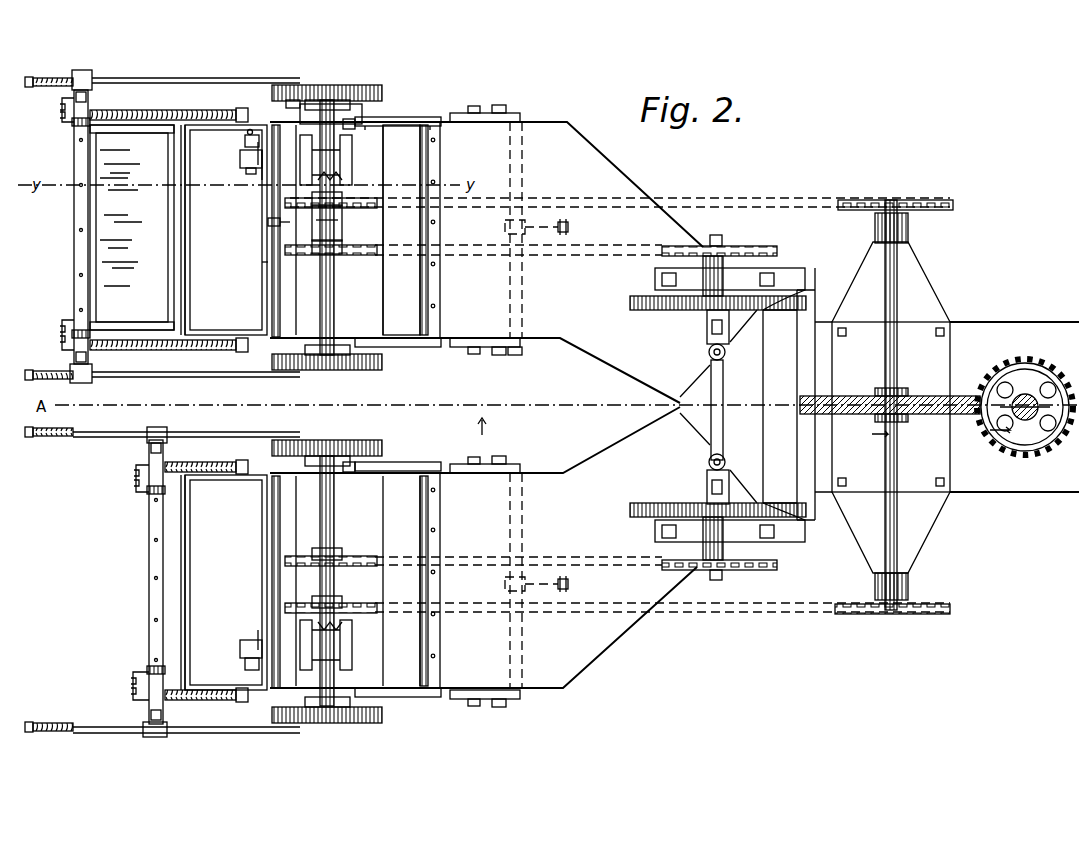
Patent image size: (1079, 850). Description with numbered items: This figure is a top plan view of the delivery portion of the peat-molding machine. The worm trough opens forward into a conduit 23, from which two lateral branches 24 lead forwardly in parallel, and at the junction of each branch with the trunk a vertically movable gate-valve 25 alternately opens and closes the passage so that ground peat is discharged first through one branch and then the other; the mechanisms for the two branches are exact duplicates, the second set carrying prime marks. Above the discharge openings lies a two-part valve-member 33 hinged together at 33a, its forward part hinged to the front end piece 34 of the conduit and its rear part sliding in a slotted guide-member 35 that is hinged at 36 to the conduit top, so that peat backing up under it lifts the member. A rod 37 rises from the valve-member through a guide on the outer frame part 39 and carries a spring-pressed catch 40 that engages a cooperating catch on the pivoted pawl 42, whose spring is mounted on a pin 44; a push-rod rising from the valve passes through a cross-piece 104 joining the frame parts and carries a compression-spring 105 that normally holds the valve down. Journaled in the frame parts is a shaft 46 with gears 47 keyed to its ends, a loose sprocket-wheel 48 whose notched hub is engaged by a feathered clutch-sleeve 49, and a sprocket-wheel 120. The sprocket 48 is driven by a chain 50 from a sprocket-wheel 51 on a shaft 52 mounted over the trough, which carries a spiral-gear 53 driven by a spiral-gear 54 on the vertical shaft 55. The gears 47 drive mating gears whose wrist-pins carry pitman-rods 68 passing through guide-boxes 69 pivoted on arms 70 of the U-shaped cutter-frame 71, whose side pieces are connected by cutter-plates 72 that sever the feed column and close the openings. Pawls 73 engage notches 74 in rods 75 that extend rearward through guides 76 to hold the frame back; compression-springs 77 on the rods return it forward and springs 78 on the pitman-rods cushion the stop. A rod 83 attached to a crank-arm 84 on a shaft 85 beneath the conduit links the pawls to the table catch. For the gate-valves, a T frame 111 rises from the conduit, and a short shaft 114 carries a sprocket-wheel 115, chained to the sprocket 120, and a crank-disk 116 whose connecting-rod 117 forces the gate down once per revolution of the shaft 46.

The conduit 23 is at (789, 394).
The lateral branch 24 is at (565, 297).
The gate-valve 25 is at (732, 320).
The valve-member 33 is at (226, 230).
The hinge 33a is at (334, 296).
The front end piece 34 is at (186, 250).
The slotted guide-member 35 is at (401, 230).
The hinge 36 is at (430, 292).
The rod 37 is at (262, 180).
The frame part 39 is at (385, 118).
The spring-pressed catch 40 is at (240, 157).
The pawl 42 is at (305, 104).
The pin 44 is at (250, 129).
The shaft 46 is at (334, 285).
The gear 47 is at (352, 85).
The loose sprocket-wheel 48 is at (352, 208).
The feathered clutch-sleeve 49 is at (342, 172).
The chain 50 is at (548, 198).
The sprocket-wheel 51 is at (862, 200).
The shaft 52 is at (900, 358).
The spiral-gear 53 is at (932, 416).
The spiral-gear 54 is at (1036, 362).
The vertical shaft 55 is at (1025, 410).
The pitman-rod 68 is at (207, 78).
The guide-box 69 is at (80, 70).
The arm 70 is at (72, 110).
The cutter-frame 71 is at (74, 254).
The cutter-plate 72 is at (132, 227).
The pawl 73 is at (462, 113).
The notch 74 is at (400, 128).
The rod 75 is at (268, 120).
The guide 76 is at (236, 110).
The coiled compression-spring 77 is at (143, 112).
The compression-spring 78 is at (45, 78).
The rod 83 is at (570, 228).
The crank-arm 84 is at (522, 240).
The shaft 85 is at (514, 356).
The cross-piece 104 is at (262, 262).
The coiled compression-spring 105 is at (268, 222).
The T frame 111 is at (715, 392).
The short shaft 114 is at (722, 240).
The sprocket-wheel 115 is at (770, 247).
The crank-disk 116 is at (662, 310).
The connecting-rod 117 is at (708, 320).
The sprocket-wheel 120 is at (340, 254).